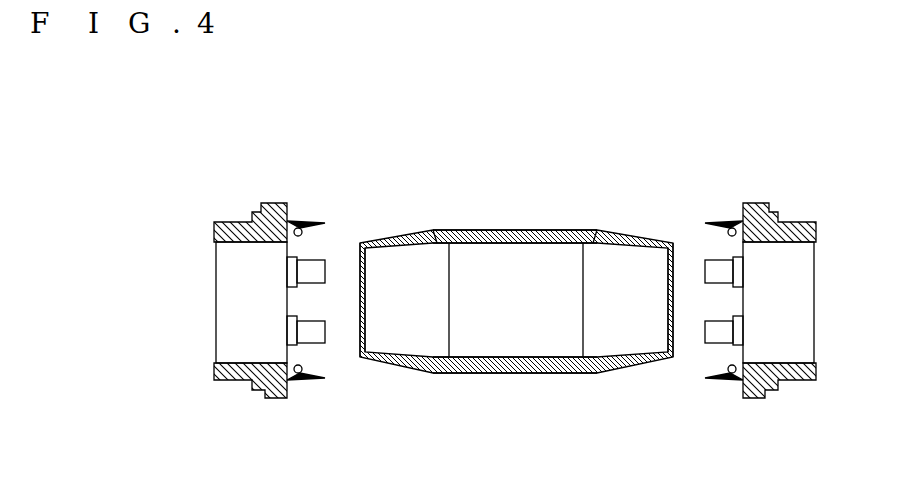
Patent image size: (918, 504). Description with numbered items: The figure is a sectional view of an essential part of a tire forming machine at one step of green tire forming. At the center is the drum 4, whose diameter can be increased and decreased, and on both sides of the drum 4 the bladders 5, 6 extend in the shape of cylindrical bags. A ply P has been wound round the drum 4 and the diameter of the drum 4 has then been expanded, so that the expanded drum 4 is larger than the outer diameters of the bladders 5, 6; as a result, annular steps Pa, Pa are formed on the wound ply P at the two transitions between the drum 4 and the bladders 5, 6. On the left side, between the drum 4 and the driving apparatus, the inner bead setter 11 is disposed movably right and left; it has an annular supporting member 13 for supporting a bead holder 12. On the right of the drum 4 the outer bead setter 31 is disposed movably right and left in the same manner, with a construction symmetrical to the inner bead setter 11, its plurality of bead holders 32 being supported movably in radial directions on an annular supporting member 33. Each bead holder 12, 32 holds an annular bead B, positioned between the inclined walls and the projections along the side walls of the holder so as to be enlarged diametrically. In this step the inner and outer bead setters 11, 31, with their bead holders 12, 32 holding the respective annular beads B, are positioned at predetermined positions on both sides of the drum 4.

The drum 4 is at (519, 280).
The bladder 5 is at (362, 340).
The bladder 6 is at (673, 340).
The ply P is at (511, 229).
The annular step Pa is at (431, 230).
The inner bead setter 11 is at (298, 257).
The bead holder 12 is at (305, 221).
The annular supporting member 13 is at (267, 203).
The outer bead setter 31 is at (746, 266).
The bead holder 32 is at (722, 222).
The annular supporting member 33 is at (752, 204).
The annular bead B is at (303, 232).